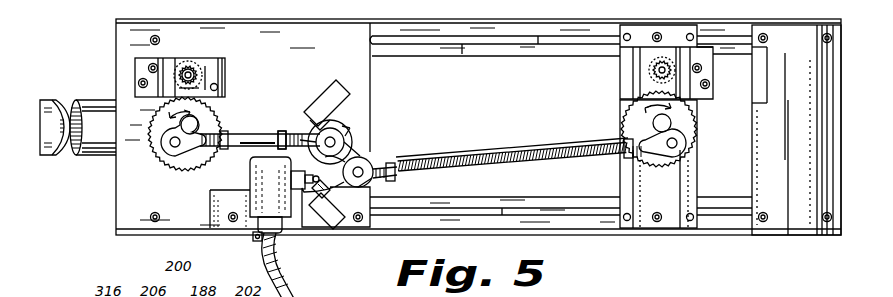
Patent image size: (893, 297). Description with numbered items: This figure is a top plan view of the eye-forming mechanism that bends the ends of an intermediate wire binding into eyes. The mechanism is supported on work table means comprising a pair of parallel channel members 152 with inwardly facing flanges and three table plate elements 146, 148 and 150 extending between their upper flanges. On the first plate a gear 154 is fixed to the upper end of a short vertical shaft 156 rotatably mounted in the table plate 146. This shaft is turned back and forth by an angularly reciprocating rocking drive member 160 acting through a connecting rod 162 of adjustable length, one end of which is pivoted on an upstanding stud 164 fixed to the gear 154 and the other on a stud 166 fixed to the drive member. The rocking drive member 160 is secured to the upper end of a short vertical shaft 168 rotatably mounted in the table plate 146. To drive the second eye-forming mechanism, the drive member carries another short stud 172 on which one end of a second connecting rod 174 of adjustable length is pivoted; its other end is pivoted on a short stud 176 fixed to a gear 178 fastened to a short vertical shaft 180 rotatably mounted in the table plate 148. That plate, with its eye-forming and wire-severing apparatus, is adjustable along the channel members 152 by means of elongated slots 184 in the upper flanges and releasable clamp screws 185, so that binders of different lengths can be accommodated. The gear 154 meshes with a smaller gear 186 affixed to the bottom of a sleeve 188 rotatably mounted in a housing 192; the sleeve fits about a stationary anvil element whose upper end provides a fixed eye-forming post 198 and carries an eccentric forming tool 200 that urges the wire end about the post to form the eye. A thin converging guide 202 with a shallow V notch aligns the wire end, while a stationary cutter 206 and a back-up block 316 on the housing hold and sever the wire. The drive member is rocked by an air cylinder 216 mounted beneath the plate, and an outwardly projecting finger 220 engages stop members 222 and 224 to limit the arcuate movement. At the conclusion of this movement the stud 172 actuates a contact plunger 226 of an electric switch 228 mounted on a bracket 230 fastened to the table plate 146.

The table plate element 146 is at (365, 85).
The table plate element 148 is at (624, 183).
The table plate element 150 is at (792, 222).
The channel member 152 is at (464, 44).
The gear 154 is at (228, 140).
The short vertical shaft 156 is at (196, 123).
The rocking drive member 160 is at (345, 122).
The connecting rod 162 is at (282, 130).
The upstanding stud 164 is at (165, 152).
The stud 166 is at (352, 134).
The short vertical shaft 168 is at (368, 151).
The short stud 172 is at (380, 185).
The second connecting rod 174 is at (487, 149).
The short stud 176 is at (680, 147).
The gear 178 is at (620, 125).
The short vertical shaft 180 is at (670, 123).
The elongated slot 184 is at (538, 40).
The releasable clamp screw 185 is at (655, 40).
The gear 186 is at (188, 61).
The sleeve 188 is at (196, 66).
The housing 192 is at (214, 80).
The fixed eye-forming post 198 is at (196, 80).
The forming tool 200 is at (201, 78).
The converging guide 202 is at (217, 87).
The stationary cutter 206 is at (162, 62).
The air cylinder 216 is at (97, 156).
The outwardly projecting finger 220 is at (312, 230).
The stop member 222 is at (325, 226).
The stop member 224 is at (315, 86).
The contact plunger 226 is at (296, 179).
The electric switch 228 is at (250, 157).
The bracket 230 is at (213, 213).
The back-up block 316 is at (138, 77).